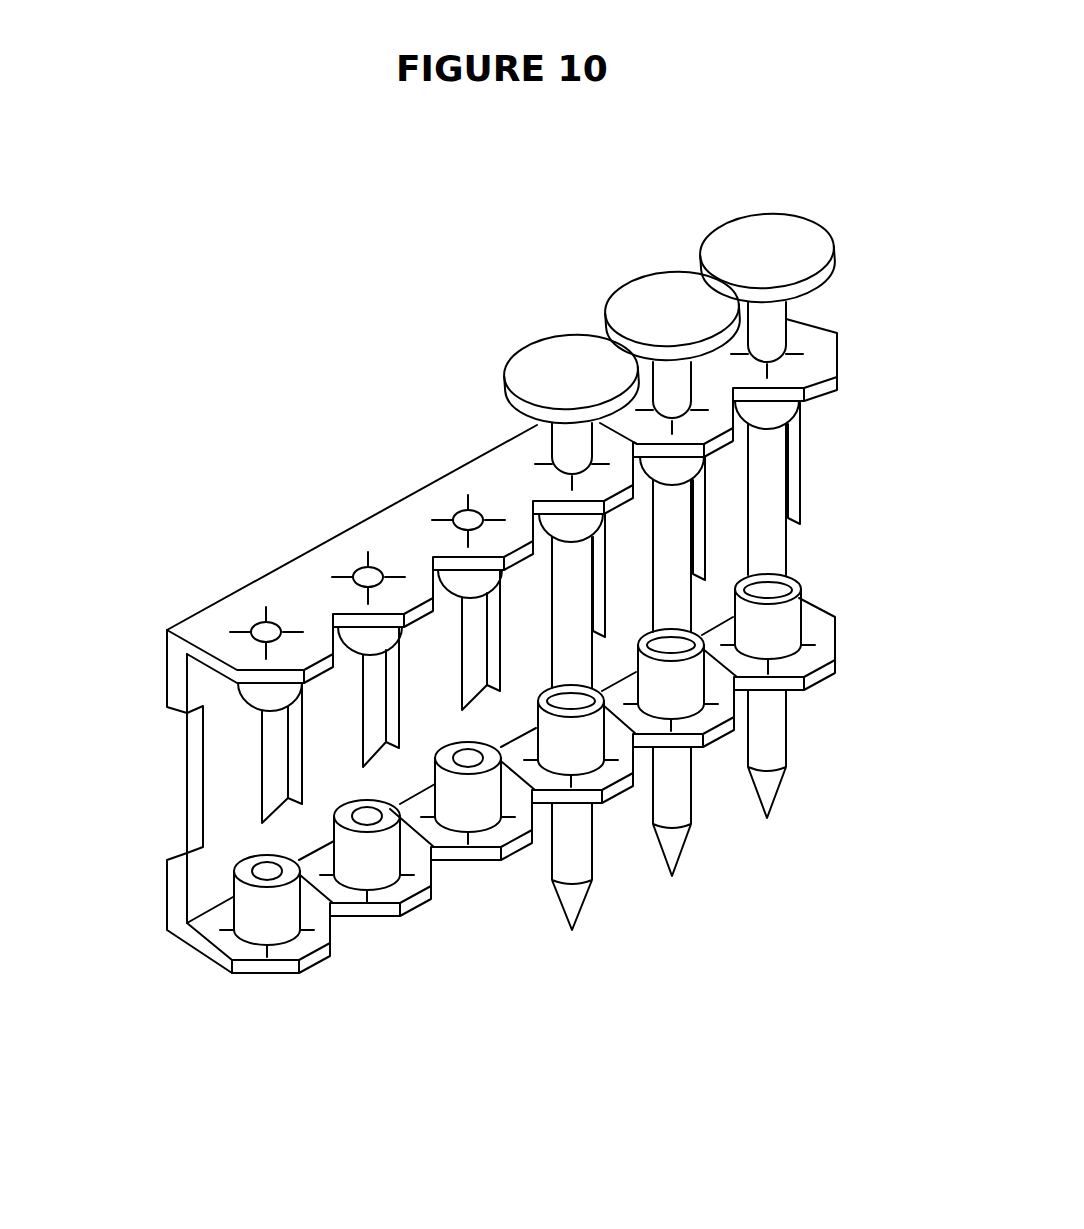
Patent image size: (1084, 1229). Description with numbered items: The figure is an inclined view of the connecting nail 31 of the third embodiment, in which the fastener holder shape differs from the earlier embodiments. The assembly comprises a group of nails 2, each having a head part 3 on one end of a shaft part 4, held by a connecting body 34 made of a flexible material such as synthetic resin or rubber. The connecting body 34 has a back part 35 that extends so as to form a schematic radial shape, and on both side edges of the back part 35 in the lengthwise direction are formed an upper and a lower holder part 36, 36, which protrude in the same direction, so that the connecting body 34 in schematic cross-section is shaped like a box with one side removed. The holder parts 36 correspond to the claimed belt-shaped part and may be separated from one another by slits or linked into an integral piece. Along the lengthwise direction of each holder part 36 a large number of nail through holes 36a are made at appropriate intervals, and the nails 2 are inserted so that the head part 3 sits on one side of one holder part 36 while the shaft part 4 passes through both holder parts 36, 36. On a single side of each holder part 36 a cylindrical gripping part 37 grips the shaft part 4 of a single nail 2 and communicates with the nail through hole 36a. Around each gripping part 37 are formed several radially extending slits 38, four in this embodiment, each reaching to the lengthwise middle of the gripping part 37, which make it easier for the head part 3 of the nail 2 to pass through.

The nail 2 is at (710, 221).
The head part 3 is at (780, 237).
The shaft part 4 is at (670, 611).
The connecting nail 31 is at (475, 258).
The connecting body 34 is at (157, 665).
The back part 35 is at (232, 787).
The holder part 36 is at (302, 576).
The nail through hole 36a is at (783, 338).
The gripping part 37 is at (652, 478).
The slit 38 is at (303, 576).